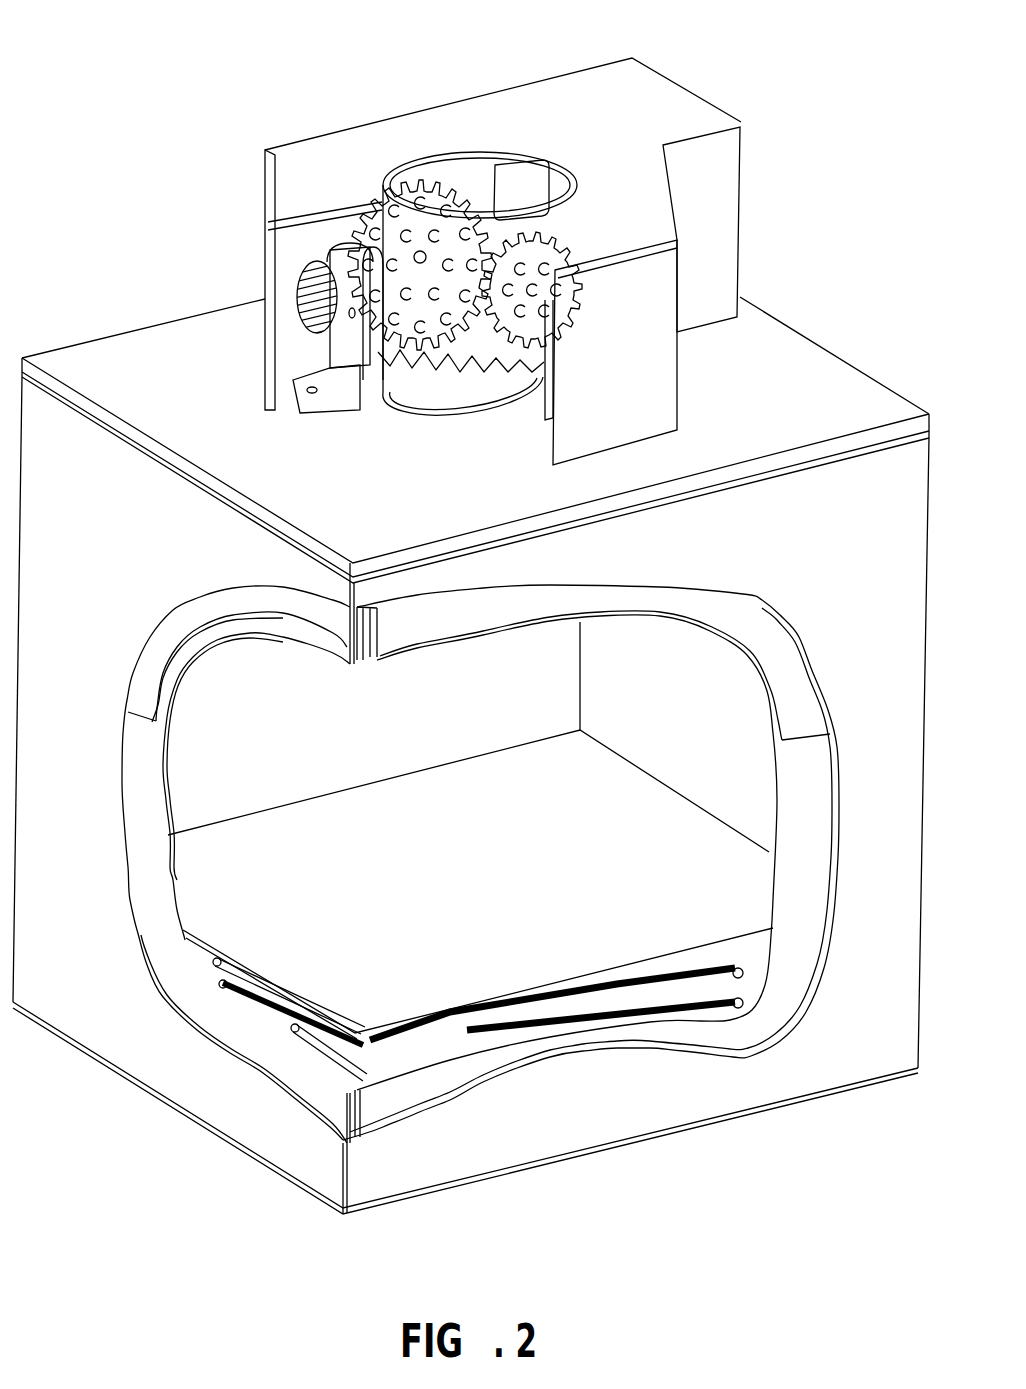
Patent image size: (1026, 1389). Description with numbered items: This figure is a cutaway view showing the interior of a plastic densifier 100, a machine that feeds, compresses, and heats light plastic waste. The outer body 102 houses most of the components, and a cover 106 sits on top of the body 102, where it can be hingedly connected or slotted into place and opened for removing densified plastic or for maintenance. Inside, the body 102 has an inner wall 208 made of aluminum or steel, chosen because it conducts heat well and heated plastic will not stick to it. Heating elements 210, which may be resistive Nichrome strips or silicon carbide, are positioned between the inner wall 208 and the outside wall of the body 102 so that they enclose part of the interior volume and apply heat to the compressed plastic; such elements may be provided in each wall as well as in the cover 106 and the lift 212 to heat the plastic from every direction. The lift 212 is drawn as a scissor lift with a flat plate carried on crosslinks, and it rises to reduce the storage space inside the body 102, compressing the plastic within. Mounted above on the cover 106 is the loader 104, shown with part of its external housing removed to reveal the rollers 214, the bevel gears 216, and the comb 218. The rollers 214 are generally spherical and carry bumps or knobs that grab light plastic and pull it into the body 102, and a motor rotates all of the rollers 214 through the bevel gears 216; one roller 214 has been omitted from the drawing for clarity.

The plastic densifier 100 is at (125, 42).
The body 102 is at (138, 1037).
The loader 104 is at (763, 212).
The cover 106 is at (188, 272).
The inner wall 208 is at (157, 875).
The heating elements 210 is at (777, 583).
The lift 212 is at (500, 908).
The rollers 214 is at (610, 217).
The bevel gears 216 is at (312, 263).
The comb 218 is at (442, 377).